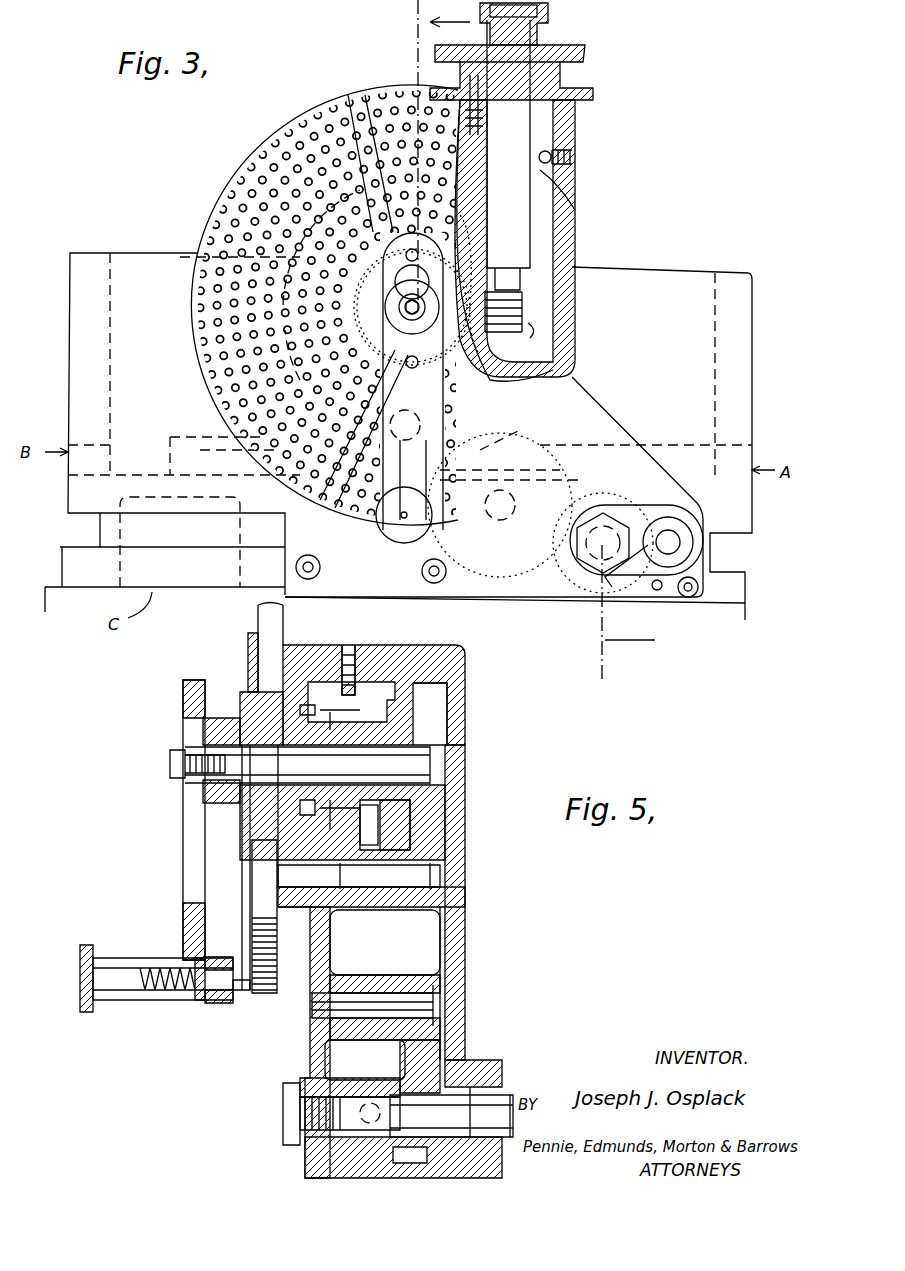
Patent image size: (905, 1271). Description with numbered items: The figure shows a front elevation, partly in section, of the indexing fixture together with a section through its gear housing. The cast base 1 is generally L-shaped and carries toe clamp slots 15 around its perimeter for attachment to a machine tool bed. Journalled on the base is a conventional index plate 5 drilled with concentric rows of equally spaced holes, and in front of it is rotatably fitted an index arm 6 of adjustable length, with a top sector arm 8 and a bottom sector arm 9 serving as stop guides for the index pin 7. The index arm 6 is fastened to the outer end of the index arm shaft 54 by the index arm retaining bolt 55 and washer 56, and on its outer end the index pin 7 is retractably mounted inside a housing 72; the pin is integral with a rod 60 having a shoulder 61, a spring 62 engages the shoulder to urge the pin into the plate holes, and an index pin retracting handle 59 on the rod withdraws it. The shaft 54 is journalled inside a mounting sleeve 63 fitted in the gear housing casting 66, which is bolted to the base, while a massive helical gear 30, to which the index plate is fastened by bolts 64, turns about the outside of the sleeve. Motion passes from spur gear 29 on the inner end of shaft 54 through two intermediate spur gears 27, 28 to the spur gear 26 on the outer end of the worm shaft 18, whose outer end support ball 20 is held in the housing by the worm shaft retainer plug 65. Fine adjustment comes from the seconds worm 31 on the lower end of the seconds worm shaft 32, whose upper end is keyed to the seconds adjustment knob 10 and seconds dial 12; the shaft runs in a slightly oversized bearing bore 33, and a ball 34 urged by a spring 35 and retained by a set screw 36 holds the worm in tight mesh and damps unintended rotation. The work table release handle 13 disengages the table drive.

In FIG. 3, the cast base 1 is at (740, 520).
In FIG. 5, the cast base 1 is at (480, 1075).
In FIG. 3, the index plate 5 is at (360, 512).
In FIG. 5, the index plate 5 is at (272, 985).
In FIG. 3, the index arm 6 is at (320, 505).
In FIG. 5, the index arm 6 is at (183, 925).
In FIG. 5, the index pin 7 is at (240, 992).
In FIG. 3, the top sector arm 8 is at (348, 170).
In FIG. 5, the top sector arm 8 is at (255, 662).
In FIG. 5, the bottom sector arm 9 is at (242, 887).
In FIG. 3, the seconds adjustment knob 10 is at (548, 15).
In FIG. 3, the seconds dial 12 is at (585, 60).
In FIG. 3, the work table release handle 13 is at (612, 585).
In FIG. 3, the toe clamp slots 15 is at (95, 545).
In FIG. 5, the worm shaft 18 is at (500, 1110).
In FIG. 5, the outer end support ball 20 is at (388, 1085).
In FIG. 3, the spur gear 26 is at (580, 565).
In FIG. 5, the spur gear 26 is at (440, 1070).
In FIG. 3, the intermediate spur gear 27 is at (535, 560).
In FIG. 5, the intermediate spur gear 27 is at (420, 980).
In FIG. 3, the intermediate spur gear 28 is at (520, 455).
In FIG. 5, the intermediate spur gear 28 is at (455, 905).
In FIG. 5, the spur gear 29 is at (400, 800).
In FIG. 3, the helical gear 30 is at (478, 340).
In FIG. 5, the helical gear 30 is at (380, 830).
In FIG. 3, the seconds worm 31 is at (537, 338).
In FIG. 3, the seconds worm shaft 32 is at (530, 245).
In FIG. 3, the bearing bore 33 is at (578, 136).
In FIG. 3, the ball 34 is at (575, 208).
In FIG. 3, the spring 35 is at (572, 184).
In FIG. 3, the set screw 36 is at (575, 162).
In FIG. 5, the index arm shaft 54 is at (380, 763).
In FIG. 5, the index arm retaining bolt 55 is at (170, 758).
In FIG. 3, the washer 56 is at (385, 380).
In FIG. 5, the washer 56 is at (205, 740).
In FIG. 3, the index pin retracting handle 59 is at (371, 535).
In FIG. 5, the index pin retracting handle 59 is at (85, 1012).
In FIG. 5, the rod 60 is at (132, 1000).
In FIG. 5, the shoulder 61 is at (215, 1003).
In FIG. 5, the spring 62 is at (172, 1000).
In FIG. 5, the mounting sleeve 63 is at (394, 695).
In FIG. 5, the bolts 64 is at (318, 683).
In FIG. 3, the worm shaft retainer plug 65 is at (612, 530).
In FIG. 5, the worm shaft retainer plug 65 is at (283, 1122).
In FIG. 3, the gear housing casting 66 is at (572, 362).
In FIG. 5, the gear housing casting 66 is at (320, 945).
In FIG. 5, the housing 72 is at (218, 957).